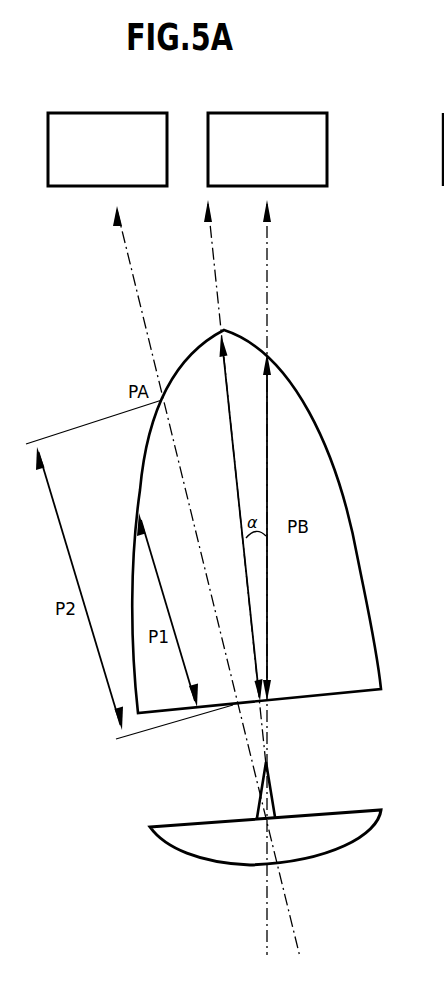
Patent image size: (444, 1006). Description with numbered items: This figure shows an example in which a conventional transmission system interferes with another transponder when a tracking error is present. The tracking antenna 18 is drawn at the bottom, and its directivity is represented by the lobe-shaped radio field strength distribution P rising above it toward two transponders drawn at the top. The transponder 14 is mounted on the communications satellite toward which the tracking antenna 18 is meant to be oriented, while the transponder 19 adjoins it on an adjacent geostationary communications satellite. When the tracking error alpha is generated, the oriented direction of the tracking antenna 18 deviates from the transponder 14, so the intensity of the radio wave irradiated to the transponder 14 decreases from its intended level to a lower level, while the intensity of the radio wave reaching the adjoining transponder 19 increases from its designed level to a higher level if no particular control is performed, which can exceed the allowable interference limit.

The transponder 19 is at (113, 112).
The transponder 14 is at (273, 112).
The tracking antenna 18 is at (383, 810).
The radio field strength distribution P is at (310, 418).